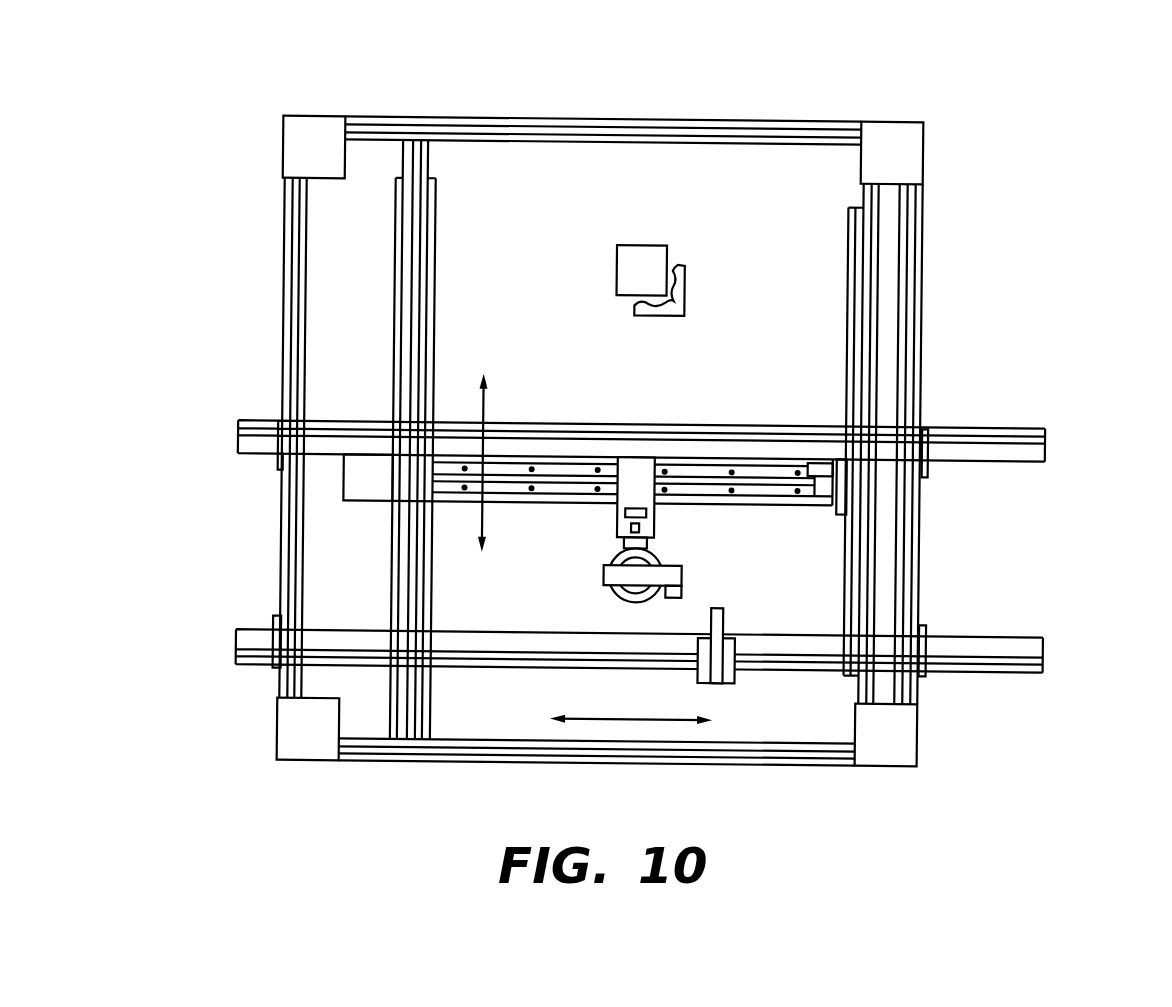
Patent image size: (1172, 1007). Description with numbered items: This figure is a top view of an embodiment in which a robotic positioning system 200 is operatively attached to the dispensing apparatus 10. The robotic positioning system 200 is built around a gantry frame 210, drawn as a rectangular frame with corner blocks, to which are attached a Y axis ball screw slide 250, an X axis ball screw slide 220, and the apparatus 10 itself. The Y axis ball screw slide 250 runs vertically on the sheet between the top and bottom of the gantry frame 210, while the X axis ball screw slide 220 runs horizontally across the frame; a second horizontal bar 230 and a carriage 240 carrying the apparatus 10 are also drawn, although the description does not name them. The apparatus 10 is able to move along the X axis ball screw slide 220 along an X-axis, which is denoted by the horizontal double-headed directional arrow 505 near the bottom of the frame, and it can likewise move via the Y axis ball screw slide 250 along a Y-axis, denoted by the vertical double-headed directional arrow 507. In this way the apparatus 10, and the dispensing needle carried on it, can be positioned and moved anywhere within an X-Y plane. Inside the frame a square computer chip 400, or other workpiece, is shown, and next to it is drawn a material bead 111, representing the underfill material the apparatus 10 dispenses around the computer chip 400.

The robotic positioning system 200 is at (1070, 45).
The gantry frame 210 is at (893, 130).
The Y axis ball screw slide 250 is at (420, 298).
The X axis ball screw slide 220 is at (1040, 456).
The lower cross bar 230 is at (1040, 657).
The linear carriage 240 is at (713, 472).
The apparatus 10 is at (708, 554).
The directional arrow 505 is at (595, 717).
The directional arrow 507 is at (486, 403).
The computer chip 400 is at (652, 252).
The material bead 111 is at (683, 305).